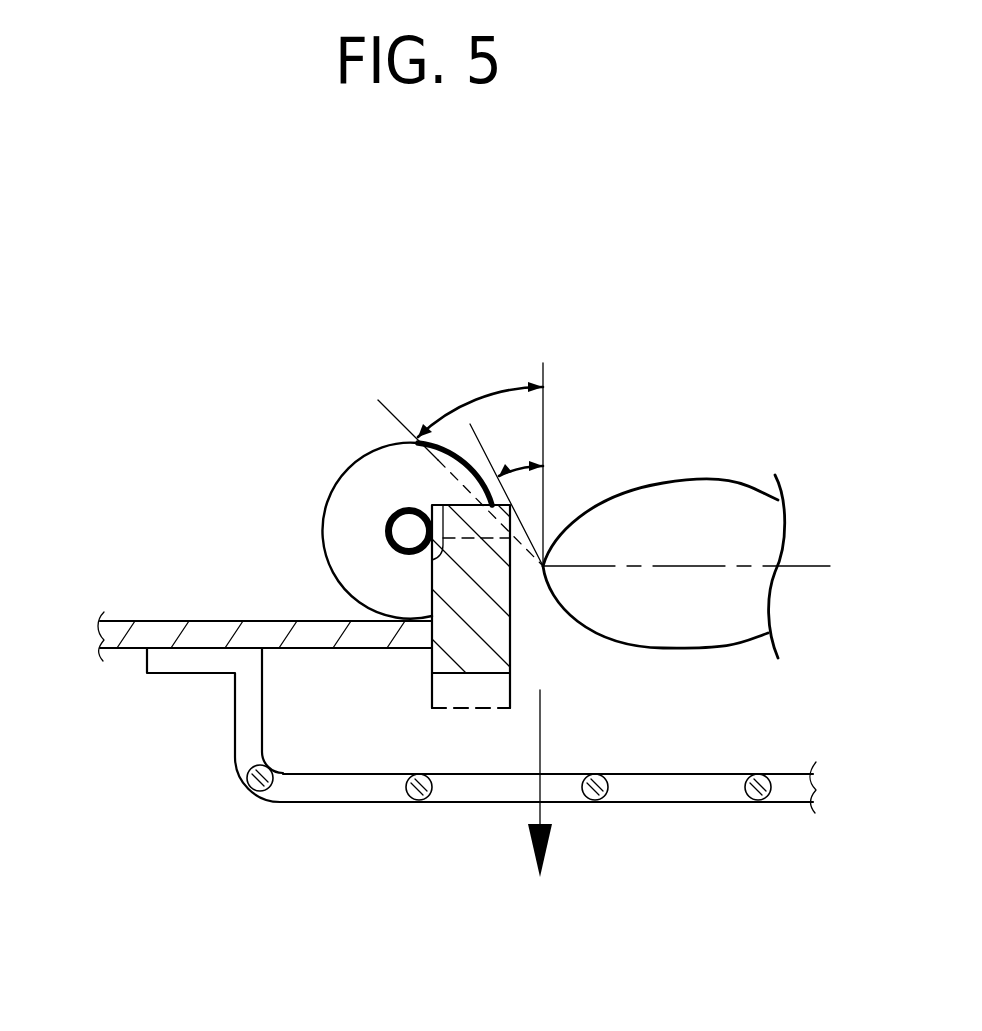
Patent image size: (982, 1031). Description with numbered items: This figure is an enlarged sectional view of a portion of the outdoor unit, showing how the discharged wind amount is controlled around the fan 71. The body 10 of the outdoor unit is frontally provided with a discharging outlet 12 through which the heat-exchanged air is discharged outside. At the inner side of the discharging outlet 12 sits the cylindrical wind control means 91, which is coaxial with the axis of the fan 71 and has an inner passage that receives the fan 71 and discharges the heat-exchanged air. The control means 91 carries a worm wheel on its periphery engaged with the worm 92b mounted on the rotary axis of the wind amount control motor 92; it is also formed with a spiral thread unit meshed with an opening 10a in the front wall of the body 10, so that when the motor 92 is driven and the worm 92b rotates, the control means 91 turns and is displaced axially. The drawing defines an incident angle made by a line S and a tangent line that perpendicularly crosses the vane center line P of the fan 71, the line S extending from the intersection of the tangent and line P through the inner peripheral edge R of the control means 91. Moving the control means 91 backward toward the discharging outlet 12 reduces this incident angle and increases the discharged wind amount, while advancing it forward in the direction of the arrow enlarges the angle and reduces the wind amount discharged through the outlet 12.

The body 10 is at (122, 650).
The opening 10a is at (435, 628).
The discharging outlet 12 is at (698, 788).
The fan 71 is at (712, 503).
The wind control means 91 is at (447, 662).
The wind amount control motor 92 is at (340, 515).
The worm 92b is at (392, 510).
The vane center line P is at (765, 567).
The inner peripheral edge R is at (543, 566).
The line S is at (477, 428).